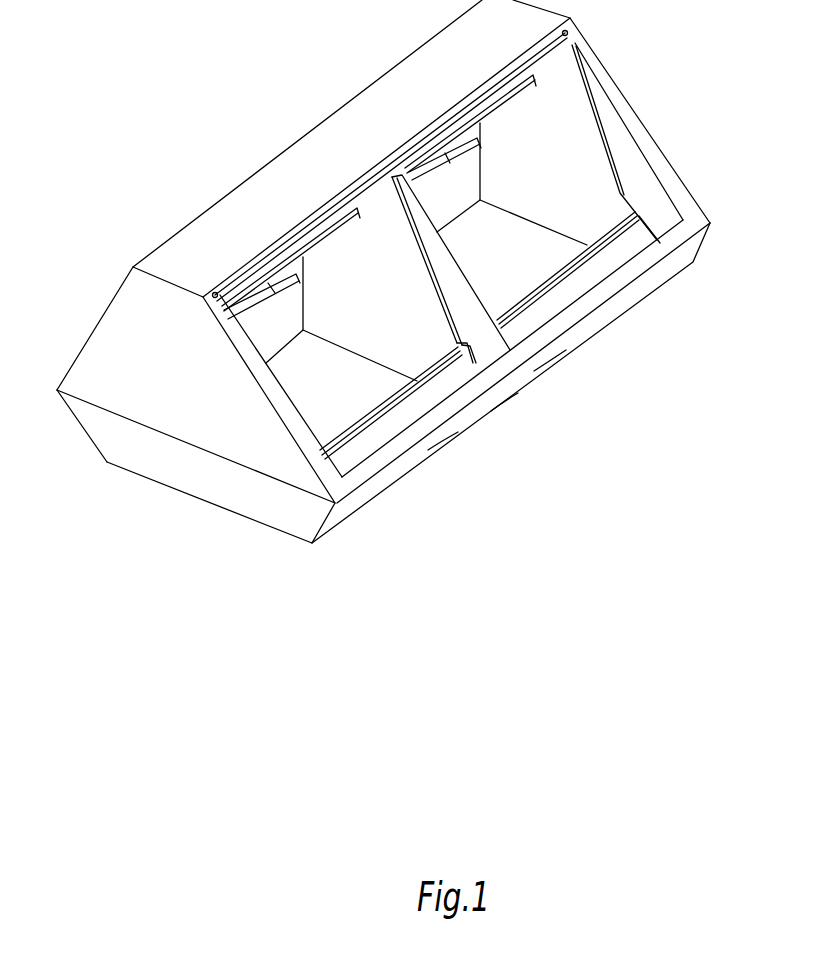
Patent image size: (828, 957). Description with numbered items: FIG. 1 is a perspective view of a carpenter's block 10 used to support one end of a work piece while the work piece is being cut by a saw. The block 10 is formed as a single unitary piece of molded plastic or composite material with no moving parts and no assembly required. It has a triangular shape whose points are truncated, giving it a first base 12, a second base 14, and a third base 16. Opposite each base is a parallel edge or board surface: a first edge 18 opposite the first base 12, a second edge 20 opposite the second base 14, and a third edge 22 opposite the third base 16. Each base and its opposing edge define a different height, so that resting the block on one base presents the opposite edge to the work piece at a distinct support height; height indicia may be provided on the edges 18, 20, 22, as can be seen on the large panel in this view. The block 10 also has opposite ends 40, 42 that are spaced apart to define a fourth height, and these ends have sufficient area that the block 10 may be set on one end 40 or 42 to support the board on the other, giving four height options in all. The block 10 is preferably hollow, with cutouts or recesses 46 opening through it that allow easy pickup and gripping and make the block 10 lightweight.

The carpentry block 10 is at (556, 413).
The first base 12 is at (108, 299).
The second base 14 is at (243, 358).
The third base 16 is at (173, 493).
The first edge 18 is at (382, 482).
The second edge 20 is at (80, 428).
The third edge 22 is at (433, 57).
The end 40 is at (127, 340).
The end 42 is at (630, 153).
The recess 46 is at (570, 200).